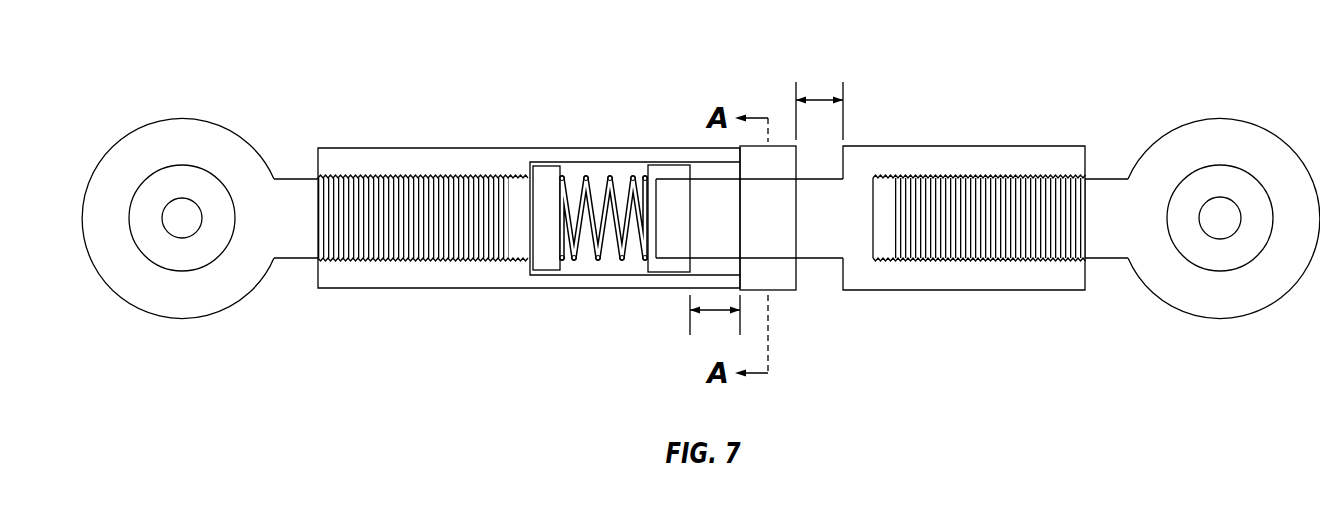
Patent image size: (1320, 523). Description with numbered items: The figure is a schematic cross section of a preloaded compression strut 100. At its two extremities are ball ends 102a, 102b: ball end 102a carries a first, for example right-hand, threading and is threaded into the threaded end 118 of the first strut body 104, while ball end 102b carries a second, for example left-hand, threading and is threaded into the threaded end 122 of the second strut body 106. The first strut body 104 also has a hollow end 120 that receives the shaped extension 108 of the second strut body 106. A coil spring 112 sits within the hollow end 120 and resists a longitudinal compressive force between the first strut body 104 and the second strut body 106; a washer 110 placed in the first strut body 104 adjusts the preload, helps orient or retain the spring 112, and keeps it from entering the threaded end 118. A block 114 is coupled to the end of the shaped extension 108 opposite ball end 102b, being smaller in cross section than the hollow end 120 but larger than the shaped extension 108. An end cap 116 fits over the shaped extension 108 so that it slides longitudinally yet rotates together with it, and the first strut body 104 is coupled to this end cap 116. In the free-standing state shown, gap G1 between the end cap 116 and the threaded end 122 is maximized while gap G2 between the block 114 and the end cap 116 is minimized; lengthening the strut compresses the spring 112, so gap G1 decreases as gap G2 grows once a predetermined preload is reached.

The compression strut 100 is at (338, 63).
The ball end 102a is at (181, 117).
The ball end 102b is at (1218, 118).
The first strut body 104 is at (410, 148).
The second strut body 106 is at (980, 145).
The shaped extension 108 is at (815, 258).
The washer 110 is at (547, 168).
The spring 112 is at (600, 180).
The block 114 is at (657, 263).
The end cap 116 is at (782, 290).
The threaded end 118 is at (517, 260).
The hollow end 120 is at (587, 265).
The threaded end 122 is at (888, 262).
The gap G1 is at (819, 98).
The gap G2 is at (715, 322).